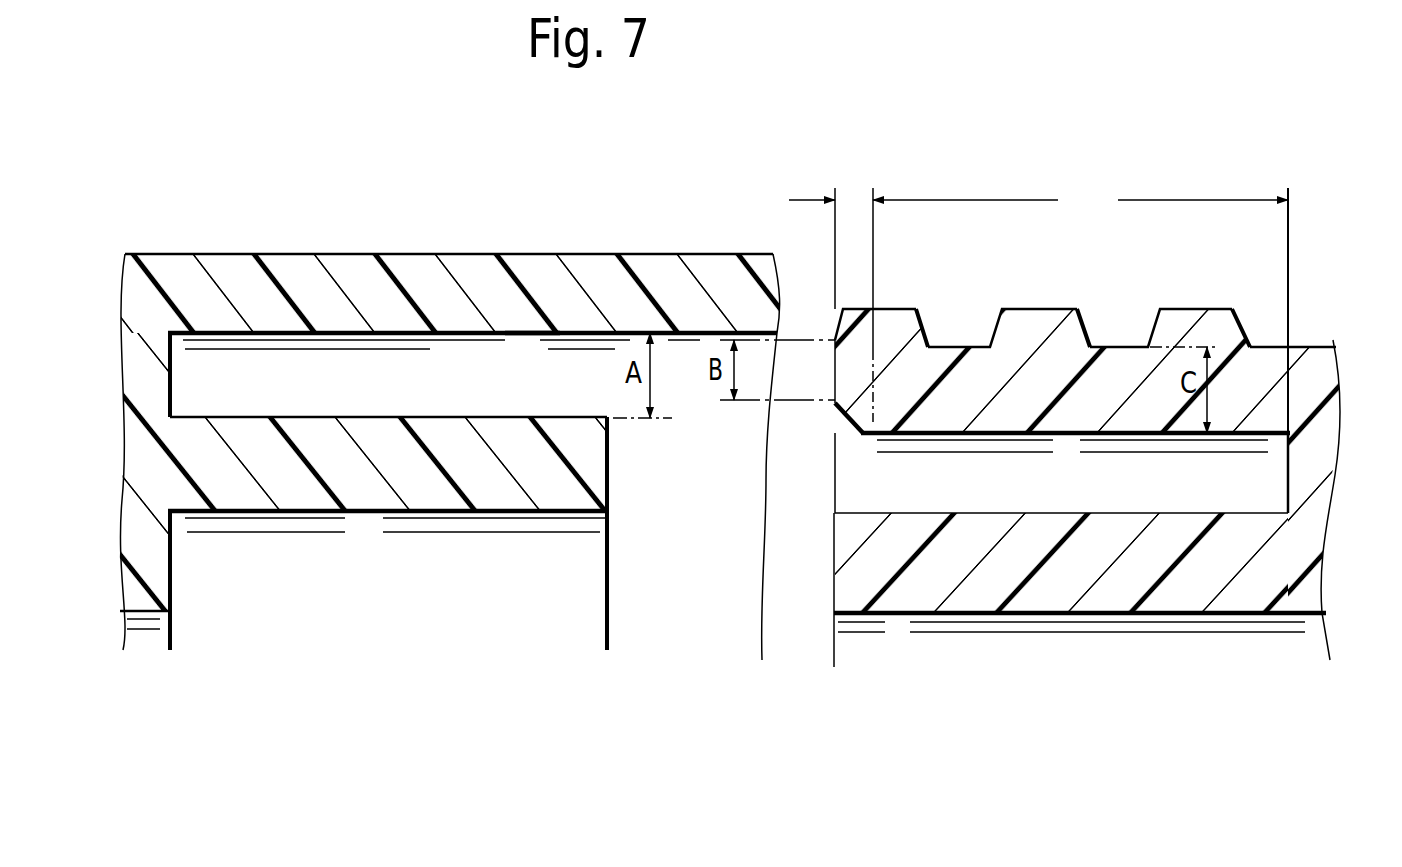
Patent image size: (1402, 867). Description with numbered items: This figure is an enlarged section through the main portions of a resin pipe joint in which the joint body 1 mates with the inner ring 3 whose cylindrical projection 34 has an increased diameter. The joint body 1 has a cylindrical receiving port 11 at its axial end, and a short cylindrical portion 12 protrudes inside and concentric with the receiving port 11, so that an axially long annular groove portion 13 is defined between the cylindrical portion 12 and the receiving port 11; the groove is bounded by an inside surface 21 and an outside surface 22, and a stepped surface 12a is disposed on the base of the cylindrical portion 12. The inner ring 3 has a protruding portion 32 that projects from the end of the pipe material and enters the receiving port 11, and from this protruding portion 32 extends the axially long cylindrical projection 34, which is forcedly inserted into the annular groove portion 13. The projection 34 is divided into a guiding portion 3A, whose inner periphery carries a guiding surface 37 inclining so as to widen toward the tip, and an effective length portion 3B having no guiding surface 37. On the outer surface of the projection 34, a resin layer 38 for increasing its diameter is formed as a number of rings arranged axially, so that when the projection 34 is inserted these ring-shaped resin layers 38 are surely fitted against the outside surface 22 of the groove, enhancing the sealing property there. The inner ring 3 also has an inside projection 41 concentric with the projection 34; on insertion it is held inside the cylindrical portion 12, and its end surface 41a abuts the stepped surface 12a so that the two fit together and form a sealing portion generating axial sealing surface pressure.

The joint body 1 is at (449, 406).
The receiving port 11 is at (712, 262).
The cylindrical portion 12 is at (372, 512).
The stepped surface 12a is at (170, 588).
The annular groove portion 13 is at (232, 352).
The inside surface 21 is at (447, 410).
The outside surface 22 is at (528, 335).
The inner ring 3 is at (1093, 347).
The guiding portion 3A is at (858, 200).
The effective length portion 3B is at (1080, 201).
The protruding portion 32 is at (1072, 416).
The cylindrical projection 34 is at (1070, 424).
The guiding surface 37 is at (848, 434).
The resin layer 38 is at (900, 305).
The inside projection 41 is at (897, 615).
The end surface 41a is at (833, 583).